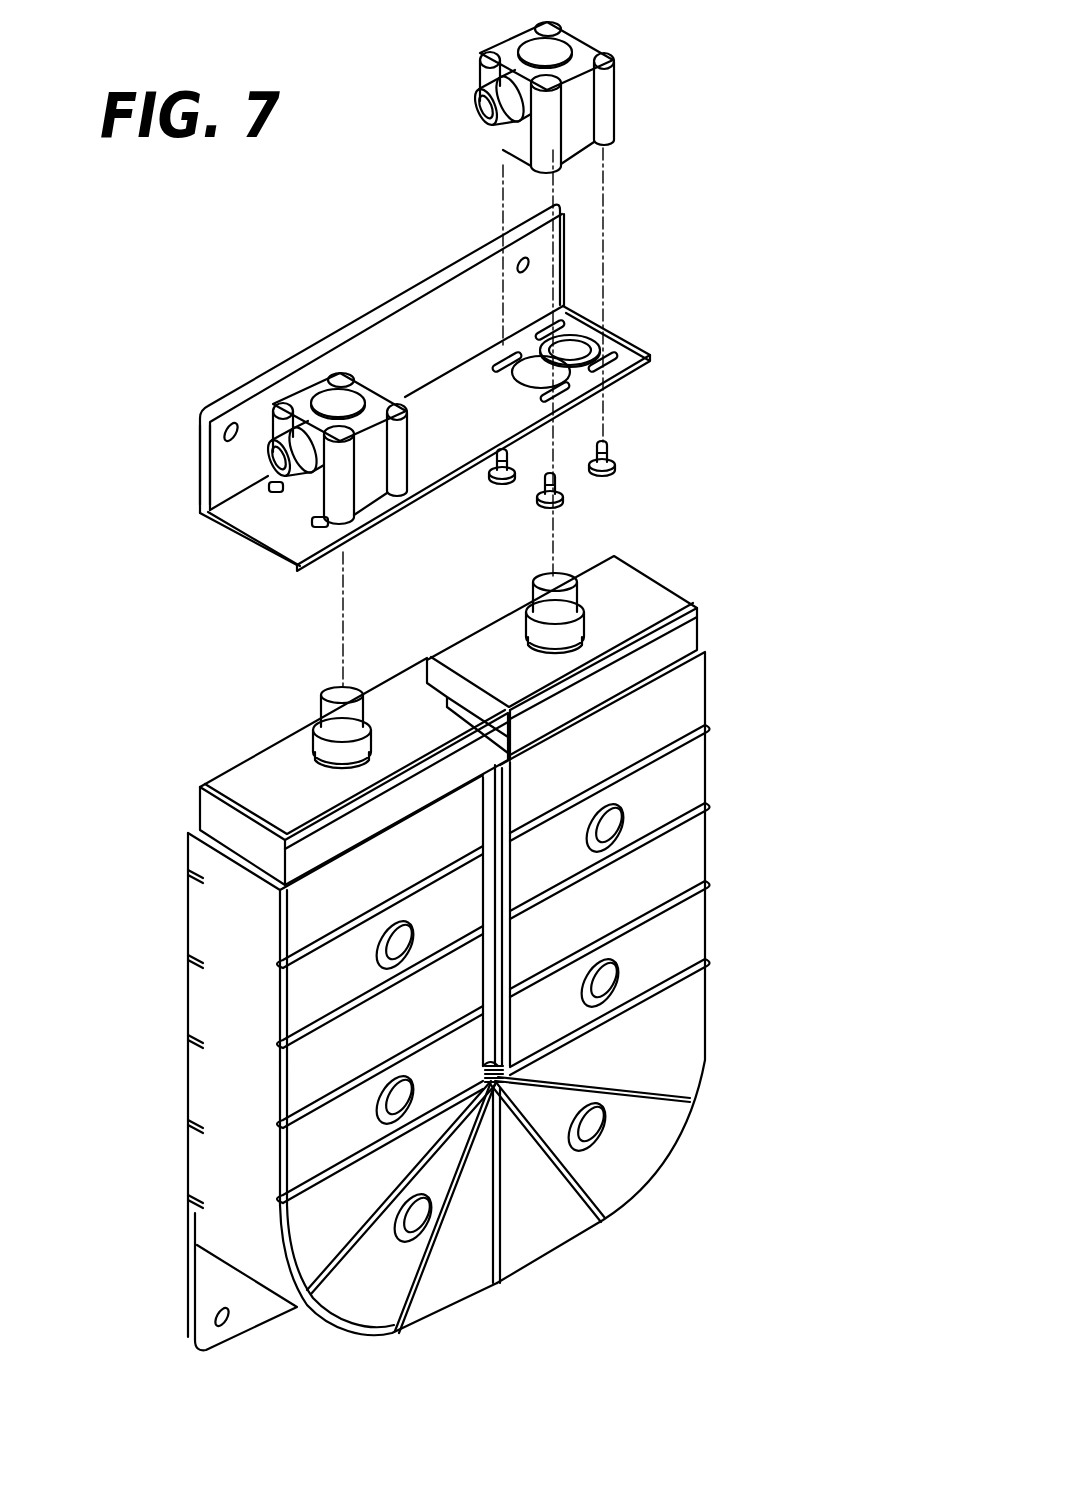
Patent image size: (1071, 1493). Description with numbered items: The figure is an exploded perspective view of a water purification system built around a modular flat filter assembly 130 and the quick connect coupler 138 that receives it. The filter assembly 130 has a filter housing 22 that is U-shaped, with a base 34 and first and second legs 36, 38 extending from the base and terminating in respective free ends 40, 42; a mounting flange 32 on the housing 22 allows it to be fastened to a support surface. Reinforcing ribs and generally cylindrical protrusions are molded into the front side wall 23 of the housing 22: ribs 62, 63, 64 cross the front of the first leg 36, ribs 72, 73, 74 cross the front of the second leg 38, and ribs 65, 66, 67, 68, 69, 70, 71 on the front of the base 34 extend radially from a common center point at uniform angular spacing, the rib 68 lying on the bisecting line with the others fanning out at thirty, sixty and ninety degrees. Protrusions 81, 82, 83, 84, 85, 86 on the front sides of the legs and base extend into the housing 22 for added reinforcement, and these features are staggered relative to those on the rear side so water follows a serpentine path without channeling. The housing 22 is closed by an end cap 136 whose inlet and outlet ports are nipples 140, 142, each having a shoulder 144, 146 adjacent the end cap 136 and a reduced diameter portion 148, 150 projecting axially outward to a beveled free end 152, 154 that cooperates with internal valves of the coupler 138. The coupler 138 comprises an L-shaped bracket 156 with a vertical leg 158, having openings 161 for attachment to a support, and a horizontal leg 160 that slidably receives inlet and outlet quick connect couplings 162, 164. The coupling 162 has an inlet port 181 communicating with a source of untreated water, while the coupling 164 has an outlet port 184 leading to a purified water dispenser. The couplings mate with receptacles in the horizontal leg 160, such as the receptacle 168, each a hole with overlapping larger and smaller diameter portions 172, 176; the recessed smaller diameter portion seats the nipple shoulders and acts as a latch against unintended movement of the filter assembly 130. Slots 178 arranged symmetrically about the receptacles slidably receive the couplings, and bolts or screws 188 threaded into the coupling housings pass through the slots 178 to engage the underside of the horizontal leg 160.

The filter housing 22 is at (725, 1008).
The front side wall 23 is at (702, 831).
The mounting flange 32 is at (263, 1327).
The base 34 is at (700, 1079).
The first leg 36 is at (207, 918).
The second leg 38 is at (696, 762).
The free end 40 is at (190, 836).
The free end 42 is at (706, 647).
The rib 62 is at (352, 920).
The rib 63 is at (353, 1001).
The rib 64 is at (353, 1082).
The rib 65 is at (356, 1157).
The rib 66 is at (354, 1238).
The rib 67 is at (420, 1305).
The first rib 68 is at (504, 1238).
The rib 69 is at (606, 1198).
The rib 70 is at (607, 1088).
The rib 71 is at (700, 936).
The rib 72 is at (700, 861).
The rib 73 is at (700, 783).
The rib 74 is at (700, 713).
The protrusion 81 is at (418, 940).
The protrusion 82 is at (418, 1096).
The protrusion 83 is at (403, 1244).
The protrusion 84 is at (604, 1129).
The protrusion 85 is at (583, 994).
The protrusion 86 is at (585, 838).
The modular flat filter assembly 130 is at (730, 603).
The end cap 136 is at (700, 637).
The quick connect coupler 138 is at (396, 245).
The nipple 140 is at (306, 711).
The nipple 142 is at (594, 579).
The shoulder 144 is at (322, 765).
The shoulder 146 is at (583, 612).
The reduced diameter portion 148 is at (367, 714).
The reduced diameter portion 150 is at (528, 593).
The beveled free end 152 is at (357, 673).
The beveled free end 154 is at (567, 571).
The L-shaped bracket 156 is at (413, 336).
The vertical leg 158 is at (563, 231).
The horizontal leg 160 is at (447, 452).
The openings 161 is at (200, 405).
The inlet quick connect coupling 162 is at (298, 371).
The outlet quick connect coupling 164 is at (497, 162).
The receptacle 168 is at (526, 336).
The larger diameter portion 172 is at (535, 385).
The smaller diameter portion 176 is at (580, 338).
The slots 178 is at (612, 366).
The inlet port 181 is at (233, 424).
The outlet port 184 is at (478, 100).
The bolts or screws 188 is at (617, 465).